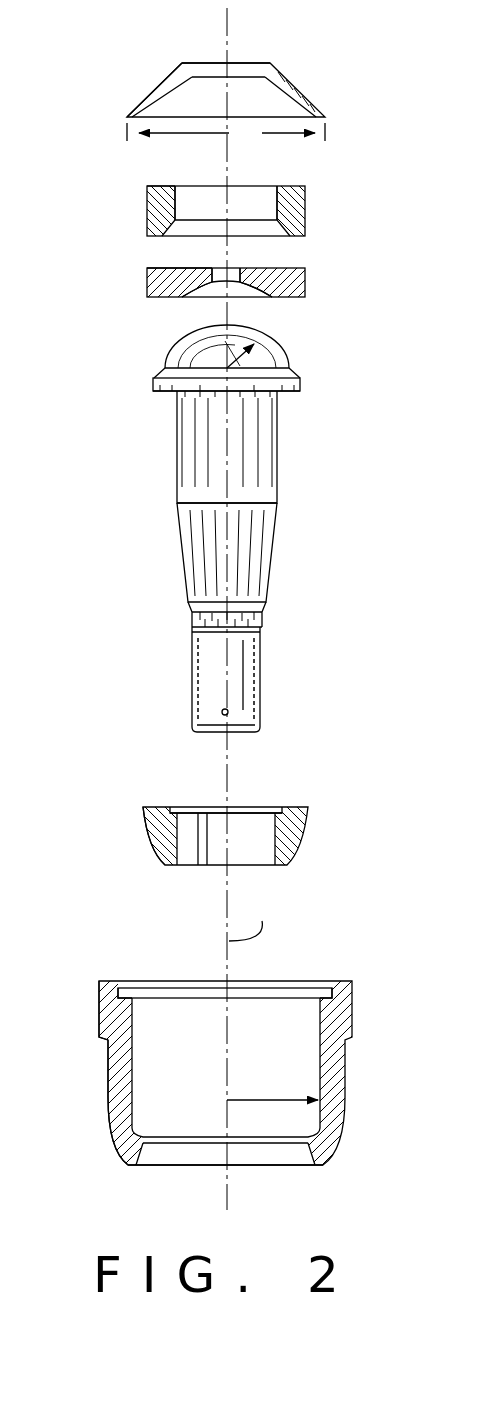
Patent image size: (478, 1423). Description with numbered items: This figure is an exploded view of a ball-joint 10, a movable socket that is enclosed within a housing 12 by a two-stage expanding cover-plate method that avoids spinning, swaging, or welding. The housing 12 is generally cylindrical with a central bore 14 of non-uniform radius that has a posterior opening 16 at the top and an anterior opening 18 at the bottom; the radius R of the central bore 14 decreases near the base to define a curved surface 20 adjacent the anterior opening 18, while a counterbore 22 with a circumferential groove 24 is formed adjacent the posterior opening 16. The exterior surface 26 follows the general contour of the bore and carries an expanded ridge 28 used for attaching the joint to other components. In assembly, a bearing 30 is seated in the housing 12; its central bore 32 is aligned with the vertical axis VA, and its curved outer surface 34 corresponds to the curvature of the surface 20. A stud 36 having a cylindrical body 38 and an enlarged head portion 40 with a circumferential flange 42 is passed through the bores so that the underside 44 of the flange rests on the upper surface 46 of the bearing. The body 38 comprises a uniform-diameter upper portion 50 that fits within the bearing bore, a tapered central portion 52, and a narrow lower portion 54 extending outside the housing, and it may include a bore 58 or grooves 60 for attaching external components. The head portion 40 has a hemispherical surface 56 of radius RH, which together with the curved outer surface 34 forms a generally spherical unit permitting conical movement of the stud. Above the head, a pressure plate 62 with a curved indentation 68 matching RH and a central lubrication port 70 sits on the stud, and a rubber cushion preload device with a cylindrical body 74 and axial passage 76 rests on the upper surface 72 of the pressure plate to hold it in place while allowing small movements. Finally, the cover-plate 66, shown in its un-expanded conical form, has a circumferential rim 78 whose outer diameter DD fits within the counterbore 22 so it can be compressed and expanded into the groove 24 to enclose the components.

The ball-joint 10 is at (322, 495).
The housing 12 is at (348, 1069).
The central bore 14 is at (288, 1024).
The posterior opening 16 is at (278, 980).
The anterior opening 18 is at (253, 1172).
The curved surface 20 is at (308, 1131).
The counterbore 22 is at (320, 987).
The circumferential groove 24 is at (129, 990).
The exterior surface 26 is at (106, 1096).
The expanded ridge 28 is at (96, 1021).
The bearing 30 is at (310, 821).
The central bore 32 is at (258, 846).
The curved outer surface 34 is at (153, 843).
The stud 36 is at (213, 519).
The body 38 is at (262, 459).
The head portion 40 is at (220, 347).
The circumferential flange 42 is at (301, 386).
The underside 44 is at (158, 396).
The upper surface 46 is at (291, 806).
The upper portion 50 is at (270, 447).
The tapered central portion 52 is at (284, 553).
The lower portion 54 is at (318, 199).
The hemispherical surface 56 is at (162, 355).
The bore 58 is at (229, 710).
The groove 60 is at (192, 670).
The pressure plate 62 is at (325, 299).
The expanding cover-plate 66 is at (246, 58).
The curved indentation 68 is at (210, 291).
The lubrication port 70 is at (240, 272).
The upper surface 72 is at (163, 268).
The cylindrical body 74 is at (158, 184).
The axial passage 76 is at (256, 200).
The circumferential rim 78 is at (124, 107).
The cap diameter dimension DD is at (226, 134).
The radius Rh RH is at (263, 342).
The radius R is at (272, 1081).
The vertical axis VA is at (252, 918).